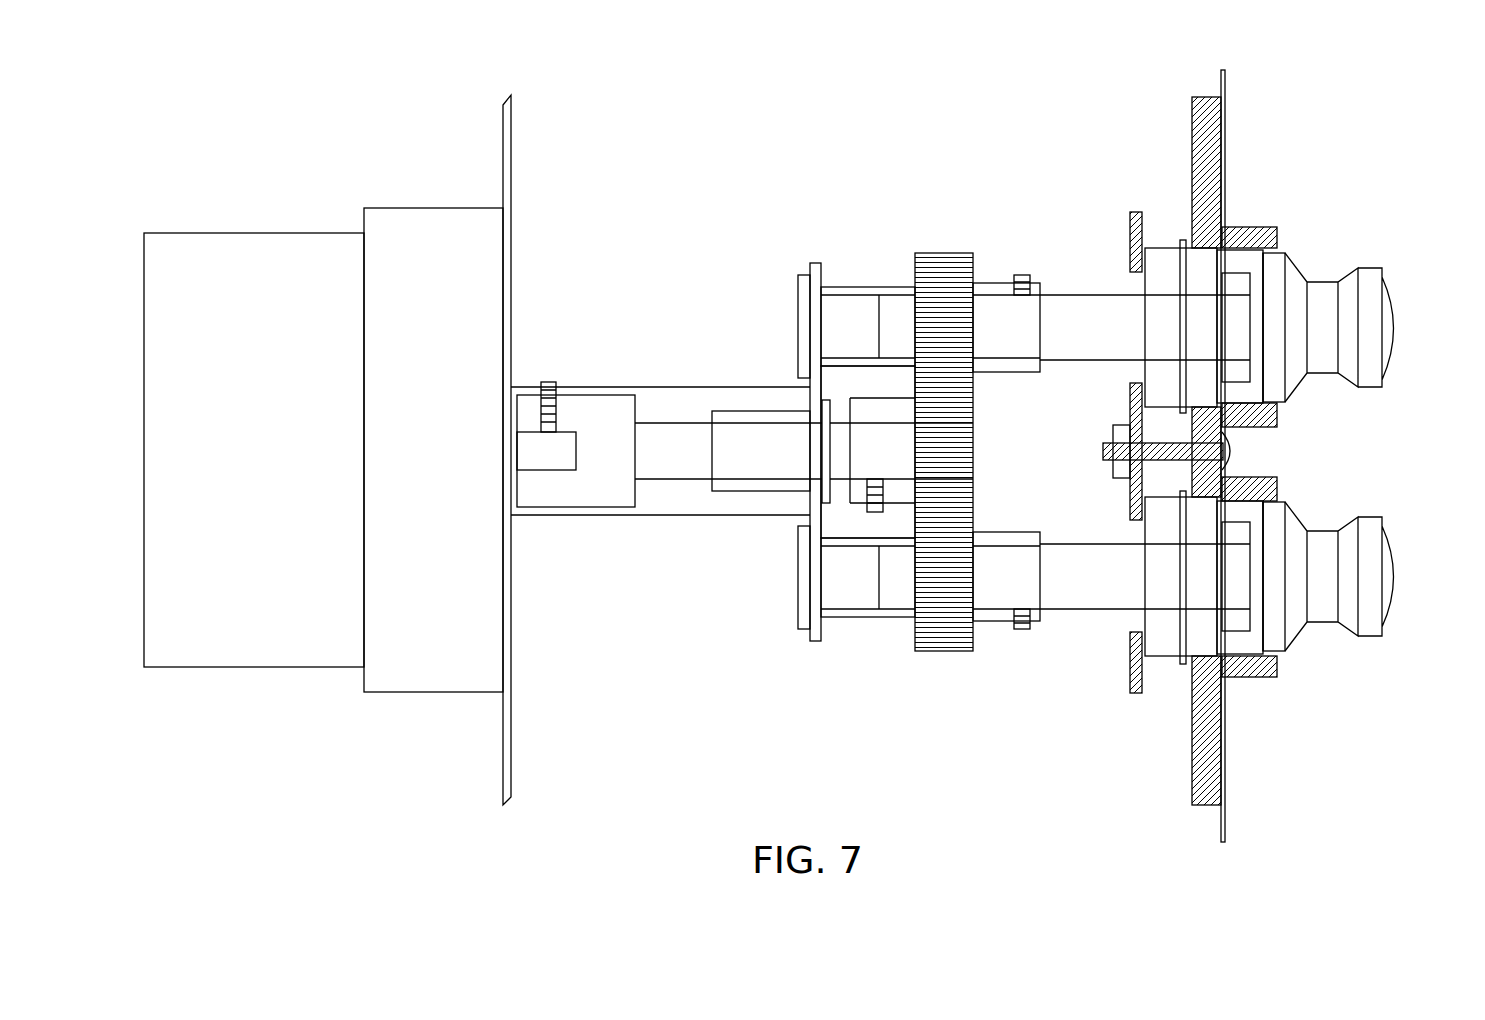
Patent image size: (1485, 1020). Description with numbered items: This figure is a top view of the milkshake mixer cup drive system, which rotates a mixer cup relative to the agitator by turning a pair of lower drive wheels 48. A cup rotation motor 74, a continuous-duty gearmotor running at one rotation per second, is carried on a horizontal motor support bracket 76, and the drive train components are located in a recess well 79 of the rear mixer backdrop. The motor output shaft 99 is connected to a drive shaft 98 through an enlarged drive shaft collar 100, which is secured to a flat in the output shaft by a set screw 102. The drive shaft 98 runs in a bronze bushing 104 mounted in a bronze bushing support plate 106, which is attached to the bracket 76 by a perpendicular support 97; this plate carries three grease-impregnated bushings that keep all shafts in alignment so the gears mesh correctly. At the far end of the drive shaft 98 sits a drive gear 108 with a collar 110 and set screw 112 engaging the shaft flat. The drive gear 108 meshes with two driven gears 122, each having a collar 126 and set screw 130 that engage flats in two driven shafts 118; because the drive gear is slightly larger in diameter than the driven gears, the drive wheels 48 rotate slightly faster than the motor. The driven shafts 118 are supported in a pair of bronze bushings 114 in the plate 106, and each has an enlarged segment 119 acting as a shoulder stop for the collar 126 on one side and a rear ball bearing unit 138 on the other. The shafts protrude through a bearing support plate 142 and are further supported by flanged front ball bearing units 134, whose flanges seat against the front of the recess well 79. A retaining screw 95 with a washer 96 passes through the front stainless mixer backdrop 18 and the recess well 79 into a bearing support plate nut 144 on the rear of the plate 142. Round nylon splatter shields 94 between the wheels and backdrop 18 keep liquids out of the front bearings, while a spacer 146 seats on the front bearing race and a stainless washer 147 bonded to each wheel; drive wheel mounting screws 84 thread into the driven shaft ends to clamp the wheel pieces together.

The front stainless mixer backdrop 18 is at (1225, 118).
The lower drive wheel 48 is at (1332, 270).
The cup rotation motor 74 is at (200, 655).
The horizontal motor support bracket 76 is at (503, 737).
The recess well 79 is at (1205, 95).
The drive wheel mounting screw 84 is at (1400, 325).
The splatter shield 94 is at (1240, 235).
The retaining screw 95 is at (1235, 450).
The washer 96 is at (1240, 435).
The perpendicular support 97 is at (645, 505).
The drive shaft 98 is at (637, 472).
The motor output shaft 99 is at (520, 452).
The drive shaft collar 100 is at (610, 400).
The set screw 102 is at (551, 380).
The bronze bushing 104 is at (768, 420).
The bronze bushing support plate 106 is at (817, 262).
The drive gear 108 is at (965, 432).
The collar 110 is at (890, 407).
The set screw 112 is at (868, 478).
The bronze bushing 114 is at (845, 287).
The driven shaft 118 is at (895, 300).
The enlarged segment 119 is at (1095, 295).
The driven gear 122 is at (943, 258).
The collar 126 is at (995, 283).
The set screw 130 is at (1030, 275).
The front ball bearing unit 134 is at (1163, 255).
The rear ball bearing unit 138 is at (1147, 260).
The bearing support plate 142 is at (1133, 675).
The bearing support plate nut 144 is at (1118, 462).
The spacer 146 is at (1245, 372).
The stainless washer 147 is at (1273, 280).